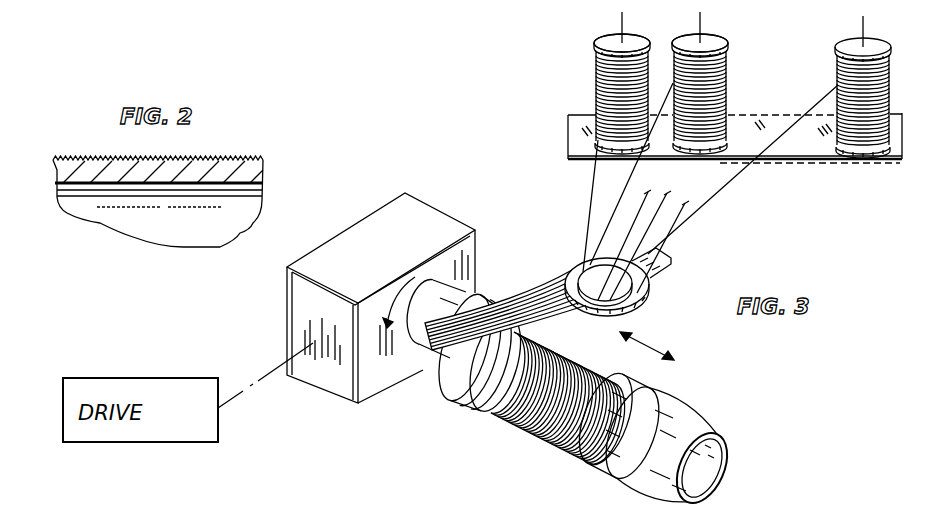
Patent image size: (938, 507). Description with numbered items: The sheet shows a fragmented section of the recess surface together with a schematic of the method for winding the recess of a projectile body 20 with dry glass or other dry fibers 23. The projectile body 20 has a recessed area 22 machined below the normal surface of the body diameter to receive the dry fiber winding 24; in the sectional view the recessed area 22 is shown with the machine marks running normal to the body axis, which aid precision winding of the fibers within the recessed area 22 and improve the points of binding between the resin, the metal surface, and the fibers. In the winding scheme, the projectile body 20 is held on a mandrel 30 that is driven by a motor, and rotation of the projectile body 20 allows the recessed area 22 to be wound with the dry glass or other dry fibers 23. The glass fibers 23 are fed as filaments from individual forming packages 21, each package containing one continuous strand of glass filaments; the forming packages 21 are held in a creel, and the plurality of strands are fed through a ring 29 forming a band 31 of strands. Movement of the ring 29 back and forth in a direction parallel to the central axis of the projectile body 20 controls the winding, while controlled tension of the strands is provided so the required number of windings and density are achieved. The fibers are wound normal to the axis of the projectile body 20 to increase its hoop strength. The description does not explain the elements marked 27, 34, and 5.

In FIG. 3, the projectile body 20 is at (698, 413).
In FIG. 3, the forming packages 21 is at (595, 65).
In FIG. 2, the recessed area 22 is at (58, 175).
In FIG. 3, the dry glass or other dry fibers 23 is at (720, 192).
In FIG. 3, the fiber winding 24 is at (523, 430).
In FIG. 3, the spool mounting plate 27 is at (802, 160).
In FIG. 2, the ring 29 is at (123, 158).
In FIG. 3, the ring 29 is at (652, 284).
In FIG. 3, the mandrel 30 is at (465, 283).
In FIG. 3, the band of strands 31 is at (577, 315).
In FIG. 3, the spool cap 34 is at (600, 33).
In FIG. 3, the section line 5 is at (483, 301).